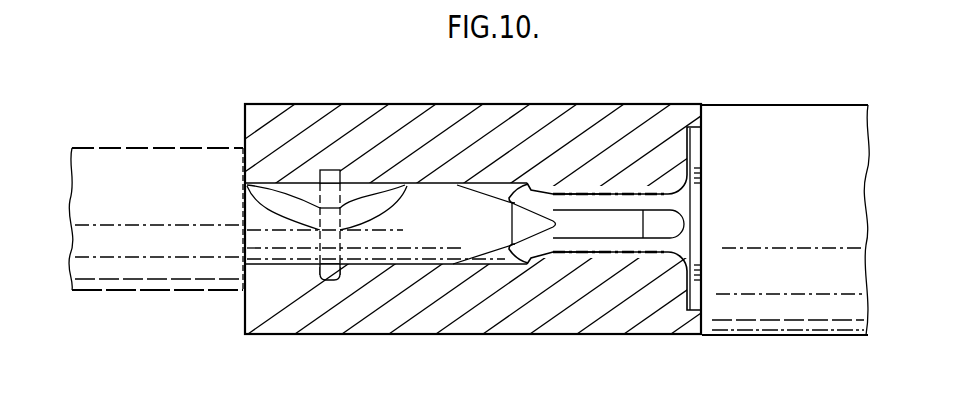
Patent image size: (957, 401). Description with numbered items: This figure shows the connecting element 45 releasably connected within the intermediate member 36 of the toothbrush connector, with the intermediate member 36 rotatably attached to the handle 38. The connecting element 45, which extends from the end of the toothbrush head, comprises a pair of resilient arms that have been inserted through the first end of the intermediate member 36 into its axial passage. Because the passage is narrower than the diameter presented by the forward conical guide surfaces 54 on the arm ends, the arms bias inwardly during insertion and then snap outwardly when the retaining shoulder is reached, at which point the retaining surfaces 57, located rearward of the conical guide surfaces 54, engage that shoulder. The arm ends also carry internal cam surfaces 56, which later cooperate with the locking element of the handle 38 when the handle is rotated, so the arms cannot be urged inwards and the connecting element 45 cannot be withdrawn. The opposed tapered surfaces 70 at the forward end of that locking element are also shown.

The intermediate member 36 is at (318, 103).
The handle 38 is at (153, 163).
The connecting element 45 is at (638, 278).
The forward conical guide surfaces 54 is at (547, 184).
The internal cam surfaces 56 is at (513, 195).
The retaining surfaces 57 is at (568, 187).
The tapered surfaces 70 is at (511, 203).